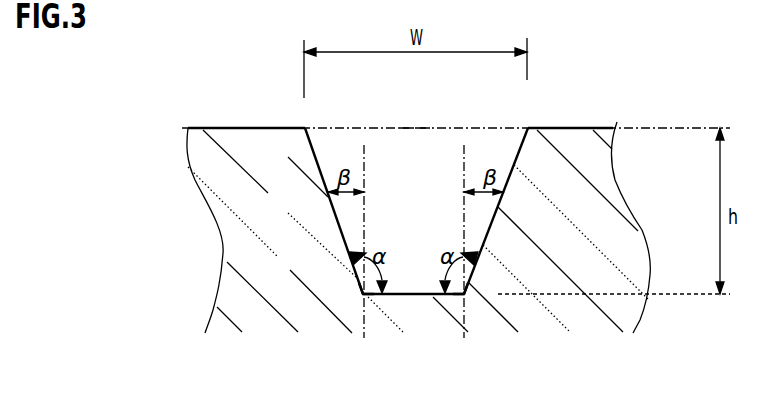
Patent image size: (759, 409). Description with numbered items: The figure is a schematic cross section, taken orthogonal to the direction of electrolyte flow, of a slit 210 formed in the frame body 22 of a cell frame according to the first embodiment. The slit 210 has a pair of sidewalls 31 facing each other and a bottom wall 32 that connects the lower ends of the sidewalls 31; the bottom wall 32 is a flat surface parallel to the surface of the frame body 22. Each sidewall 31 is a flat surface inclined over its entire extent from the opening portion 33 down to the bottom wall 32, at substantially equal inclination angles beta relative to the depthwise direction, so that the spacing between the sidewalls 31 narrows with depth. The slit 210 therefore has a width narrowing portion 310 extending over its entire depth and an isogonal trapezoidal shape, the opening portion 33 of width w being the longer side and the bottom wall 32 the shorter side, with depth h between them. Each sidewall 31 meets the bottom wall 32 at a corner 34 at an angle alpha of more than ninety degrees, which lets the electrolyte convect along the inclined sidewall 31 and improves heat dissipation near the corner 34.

The frame body 22 is at (258, 126).
The sidewall 31 is at (318, 165).
The bottom wall 32 is at (401, 292).
The opening portion 33 is at (495, 128).
The corner 34 is at (361, 297).
The slit 210 is at (415, 128).
The width narrowing portion 310 is at (292, 130).